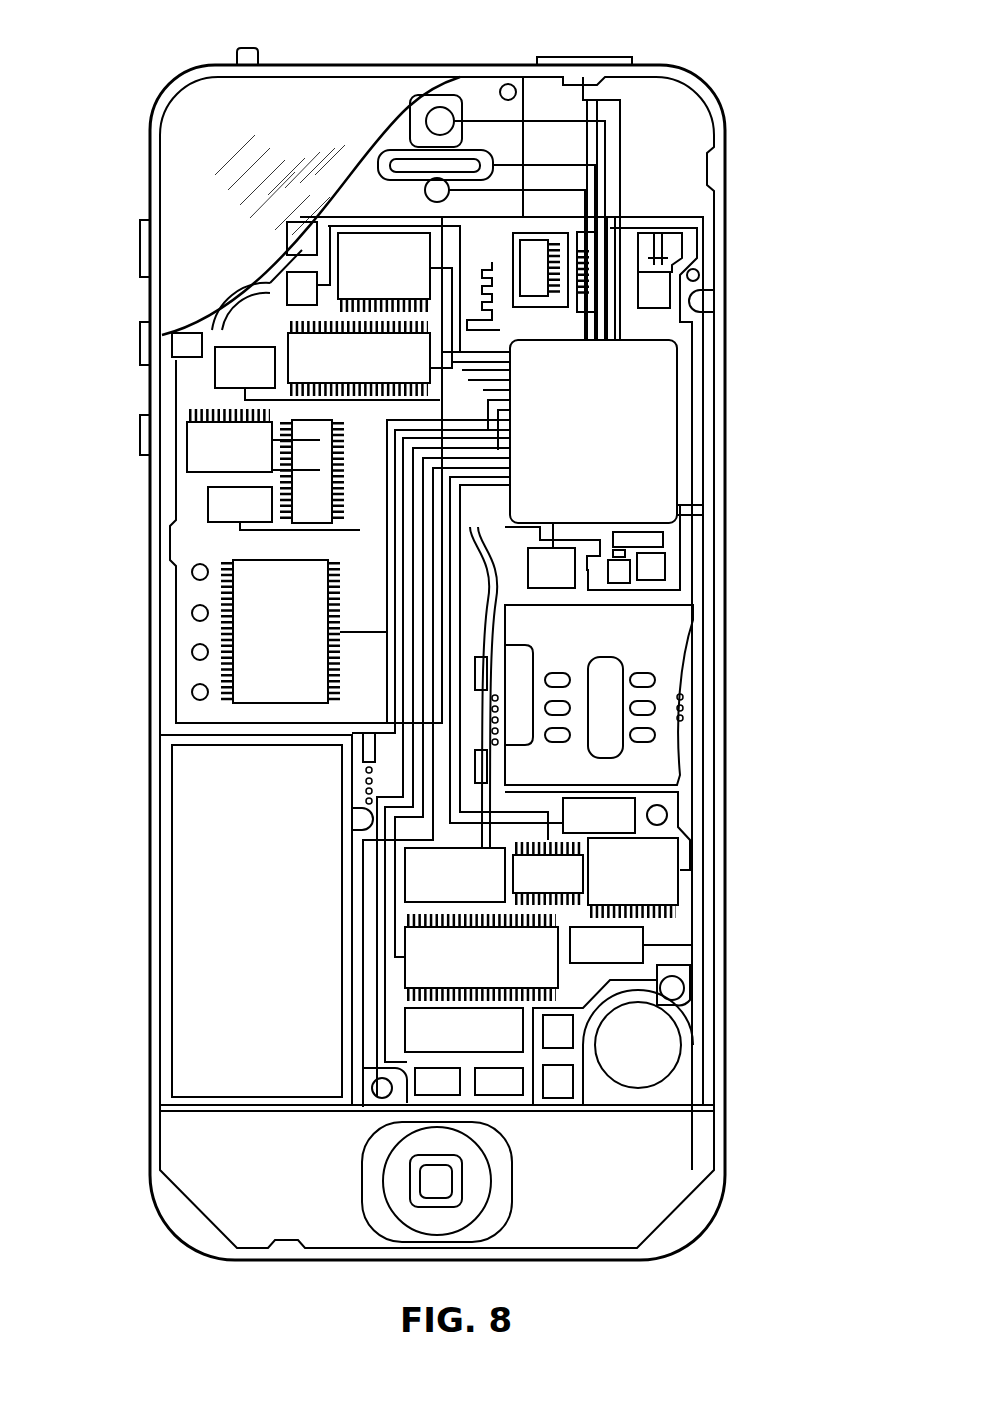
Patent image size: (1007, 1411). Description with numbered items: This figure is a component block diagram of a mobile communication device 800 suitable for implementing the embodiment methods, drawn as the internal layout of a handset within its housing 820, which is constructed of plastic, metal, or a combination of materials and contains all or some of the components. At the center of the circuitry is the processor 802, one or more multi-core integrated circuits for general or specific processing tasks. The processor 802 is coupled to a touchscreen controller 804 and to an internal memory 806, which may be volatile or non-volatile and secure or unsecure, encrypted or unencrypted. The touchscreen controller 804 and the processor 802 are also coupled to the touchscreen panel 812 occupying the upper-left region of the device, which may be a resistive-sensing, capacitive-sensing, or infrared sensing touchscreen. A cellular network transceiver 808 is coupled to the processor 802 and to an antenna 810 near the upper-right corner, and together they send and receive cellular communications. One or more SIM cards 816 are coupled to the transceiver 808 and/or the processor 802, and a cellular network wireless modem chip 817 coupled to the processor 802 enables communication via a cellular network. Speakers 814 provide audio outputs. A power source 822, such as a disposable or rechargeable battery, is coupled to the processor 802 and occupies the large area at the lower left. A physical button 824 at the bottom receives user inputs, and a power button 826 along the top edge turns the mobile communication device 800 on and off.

The mobile communication device 800 is at (100, 52).
The processor 802 is at (615, 444).
The touchscreen controller 804 is at (406, 279).
The internal memory 806 is at (303, 634).
The cellular network transceiver 808 is at (620, 245).
The antenna 810 is at (660, 285).
The touchscreen panel 812 is at (185, 165).
The speakers 814 is at (382, 152).
The SIM cards 816 is at (621, 827).
The cellular network wireless modem chip 817 is at (501, 971).
The housing 820 is at (727, 1130).
The power source 822 is at (281, 932).
The physical button 824 is at (445, 1180).
The power button 826 is at (583, 58).